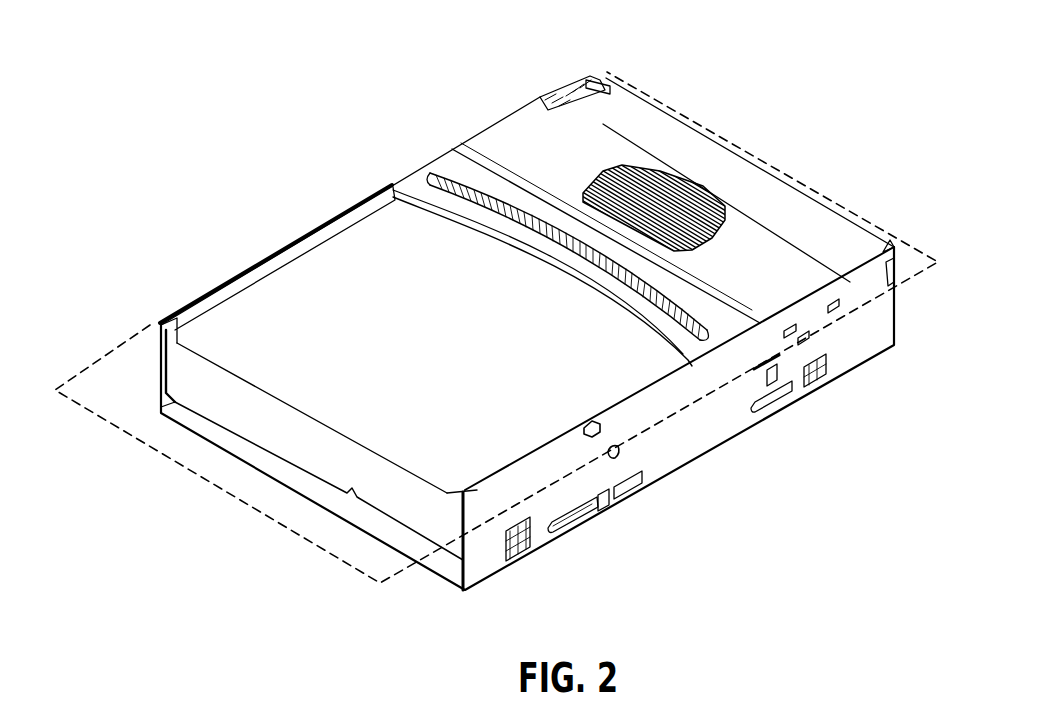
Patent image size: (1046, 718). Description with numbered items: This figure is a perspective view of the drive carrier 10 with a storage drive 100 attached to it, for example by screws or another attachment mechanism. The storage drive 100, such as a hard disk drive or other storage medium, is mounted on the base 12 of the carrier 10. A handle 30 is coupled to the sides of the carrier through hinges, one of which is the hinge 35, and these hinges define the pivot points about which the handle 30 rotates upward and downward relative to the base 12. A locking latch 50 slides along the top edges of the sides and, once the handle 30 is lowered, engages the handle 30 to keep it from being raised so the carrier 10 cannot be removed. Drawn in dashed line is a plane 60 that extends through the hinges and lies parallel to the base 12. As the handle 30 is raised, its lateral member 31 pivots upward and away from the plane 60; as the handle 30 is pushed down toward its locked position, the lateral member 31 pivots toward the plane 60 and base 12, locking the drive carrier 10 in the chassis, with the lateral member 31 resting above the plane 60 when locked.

The drive carrier 10 is at (332, 52).
The base 12 is at (400, 536).
The handle 30 is at (450, 150).
The lateral member 31 is at (503, 177).
The hinge 35 is at (613, 445).
The locking latch 50 is at (777, 238).
The plane 60 is at (657, 97).
The storage drive 100 is at (278, 418).